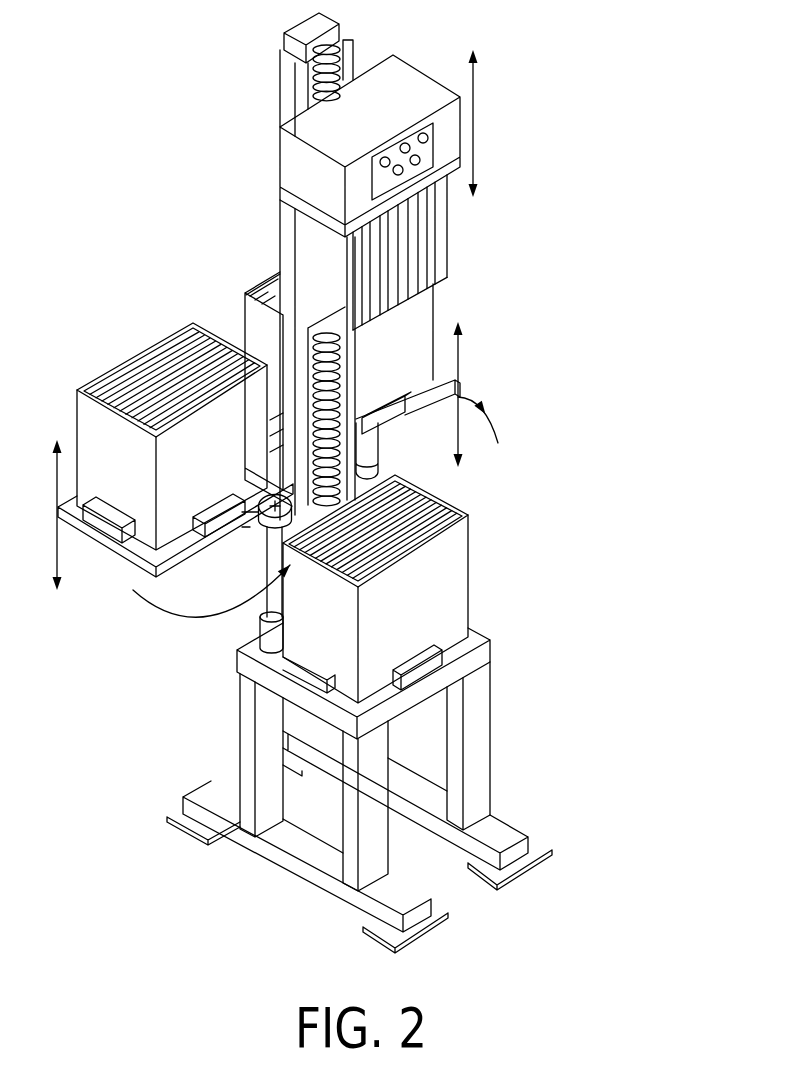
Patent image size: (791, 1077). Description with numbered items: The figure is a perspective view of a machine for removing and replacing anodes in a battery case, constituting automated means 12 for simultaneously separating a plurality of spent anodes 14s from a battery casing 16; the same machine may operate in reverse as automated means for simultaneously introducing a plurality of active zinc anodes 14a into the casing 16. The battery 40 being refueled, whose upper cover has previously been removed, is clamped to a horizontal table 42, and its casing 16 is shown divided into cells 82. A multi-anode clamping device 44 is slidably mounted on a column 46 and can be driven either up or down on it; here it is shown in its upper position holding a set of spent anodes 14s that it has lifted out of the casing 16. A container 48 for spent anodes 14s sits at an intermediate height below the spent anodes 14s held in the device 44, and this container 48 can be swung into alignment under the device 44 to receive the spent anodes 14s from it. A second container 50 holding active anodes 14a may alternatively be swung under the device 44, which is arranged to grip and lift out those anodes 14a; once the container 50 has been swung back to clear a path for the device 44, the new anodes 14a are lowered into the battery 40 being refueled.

The automated means 12 is at (542, 778).
The active zinc anodes 14a is at (276, 274).
The spent anodes 14s is at (445, 225).
The battery casing 16 is at (414, 570).
The battery 40 is at (496, 530).
The horizontal table 42 is at (480, 636).
The multi-anode clamping device 44 is at (398, 78).
The column 46 is at (280, 83).
The container for spent anodes 48 is at (95, 427).
The second container 50 is at (258, 317).
The cells 82 is at (415, 497).